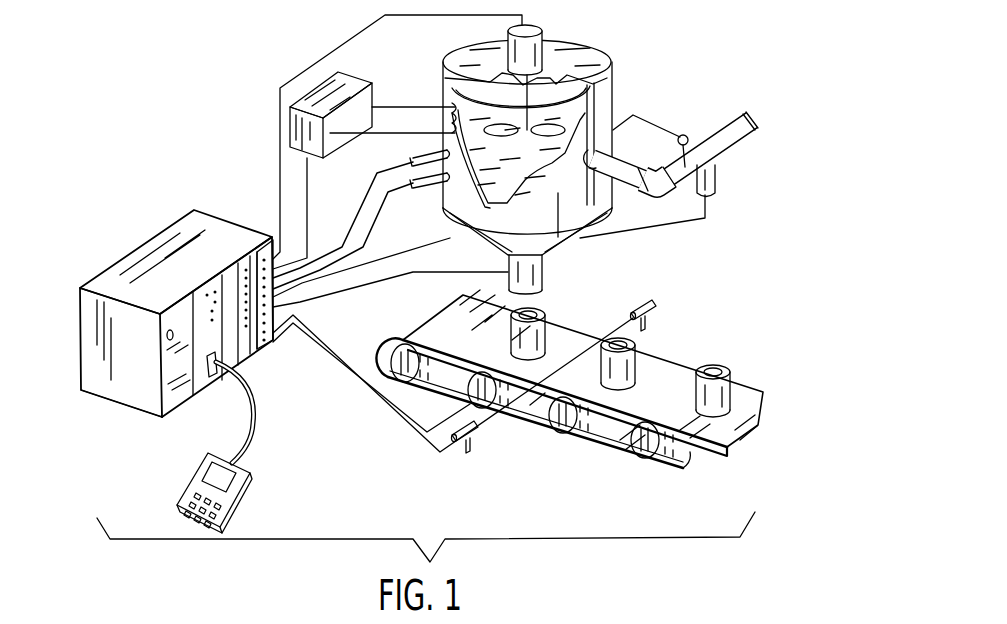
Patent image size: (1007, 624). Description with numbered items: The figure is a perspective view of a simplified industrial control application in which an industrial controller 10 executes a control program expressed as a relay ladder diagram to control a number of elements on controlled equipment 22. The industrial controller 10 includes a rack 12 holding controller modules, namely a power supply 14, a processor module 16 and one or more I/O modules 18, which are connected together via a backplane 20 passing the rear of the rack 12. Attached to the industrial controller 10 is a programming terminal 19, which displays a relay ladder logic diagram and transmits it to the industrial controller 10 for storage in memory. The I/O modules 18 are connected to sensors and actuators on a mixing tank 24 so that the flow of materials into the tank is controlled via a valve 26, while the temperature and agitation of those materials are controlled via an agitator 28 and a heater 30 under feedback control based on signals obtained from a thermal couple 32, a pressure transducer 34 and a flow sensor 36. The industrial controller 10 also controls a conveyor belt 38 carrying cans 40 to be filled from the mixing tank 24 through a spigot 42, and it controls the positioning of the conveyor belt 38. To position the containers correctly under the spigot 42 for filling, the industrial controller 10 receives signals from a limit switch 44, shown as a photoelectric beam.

The industrial controller 10 is at (162, 226).
The rack 12 is at (148, 247).
The power supply 14 is at (183, 400).
The processor module 16 is at (210, 378).
The I/O modules 18 is at (262, 347).
The programming terminal 19 is at (178, 482).
The backplane 20 is at (74, 353).
The controlled equipment 22 is at (697, 63).
The mixing tank 24 is at (612, 100).
The valve 26 is at (716, 182).
The agitator 28 is at (540, 57).
The heater 30 is at (415, 100).
The thermal couple 32 is at (410, 160).
The pressure transducer 34 is at (418, 186).
The flow sensor 36 is at (683, 134).
The conveyor belt 38 is at (752, 390).
The cans 40 is at (637, 360).
The spigot 42 is at (542, 277).
The limit switch 44 is at (656, 304).